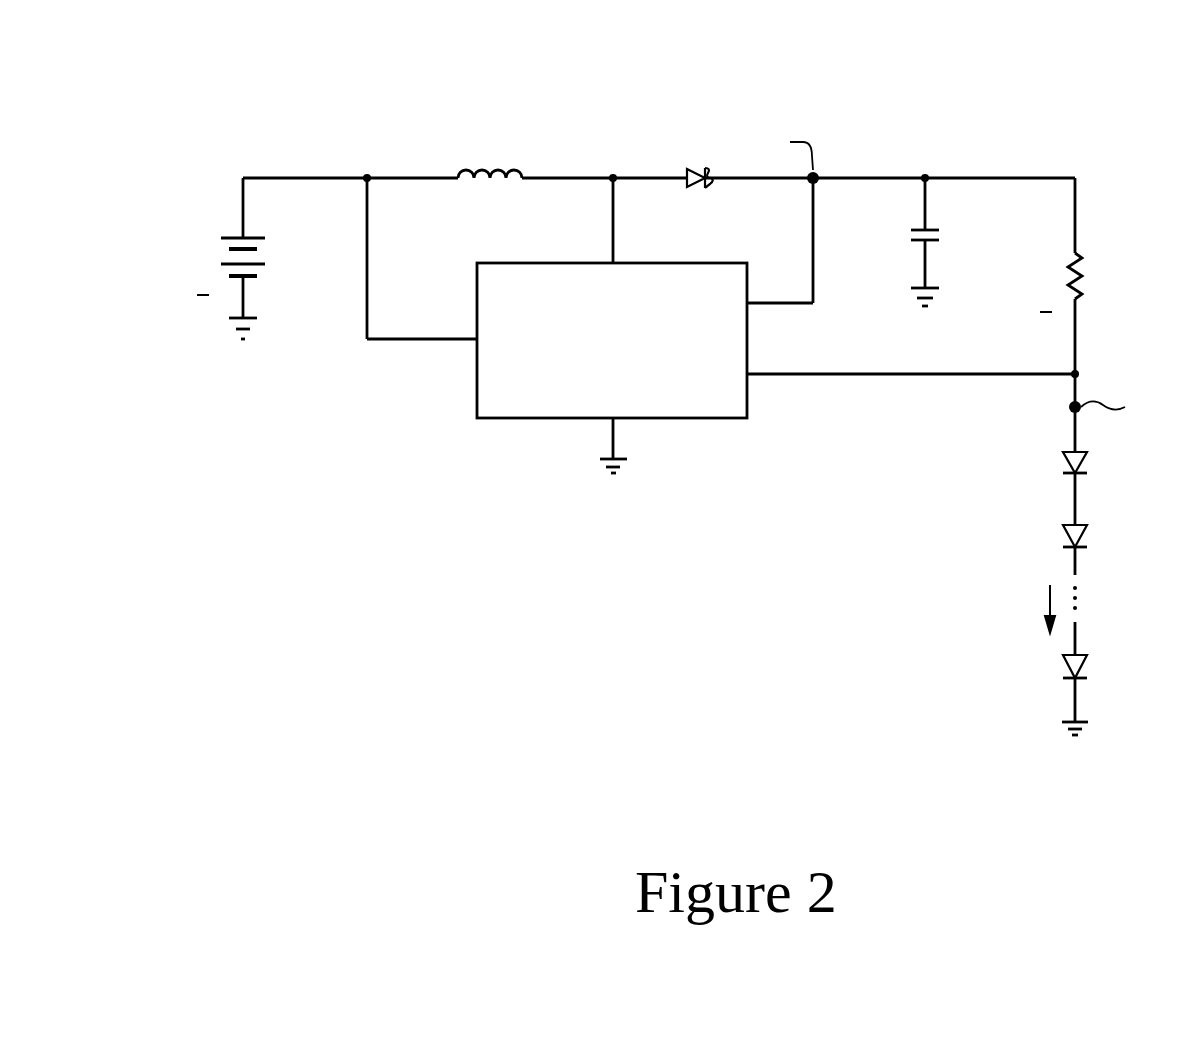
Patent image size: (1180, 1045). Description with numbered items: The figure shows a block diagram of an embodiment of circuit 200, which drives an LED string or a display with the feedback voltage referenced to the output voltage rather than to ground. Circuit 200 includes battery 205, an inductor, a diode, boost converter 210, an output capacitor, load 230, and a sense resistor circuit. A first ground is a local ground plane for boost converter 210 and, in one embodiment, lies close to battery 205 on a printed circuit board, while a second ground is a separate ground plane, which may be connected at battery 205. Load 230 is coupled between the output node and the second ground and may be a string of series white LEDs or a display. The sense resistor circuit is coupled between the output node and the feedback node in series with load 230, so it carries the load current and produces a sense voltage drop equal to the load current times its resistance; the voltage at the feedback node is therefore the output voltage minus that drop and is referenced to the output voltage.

The circuit 200 is at (660, 40).
The battery 205 is at (262, 238).
The boost converter 210 is at (596, 405).
The load 230 is at (1098, 448).